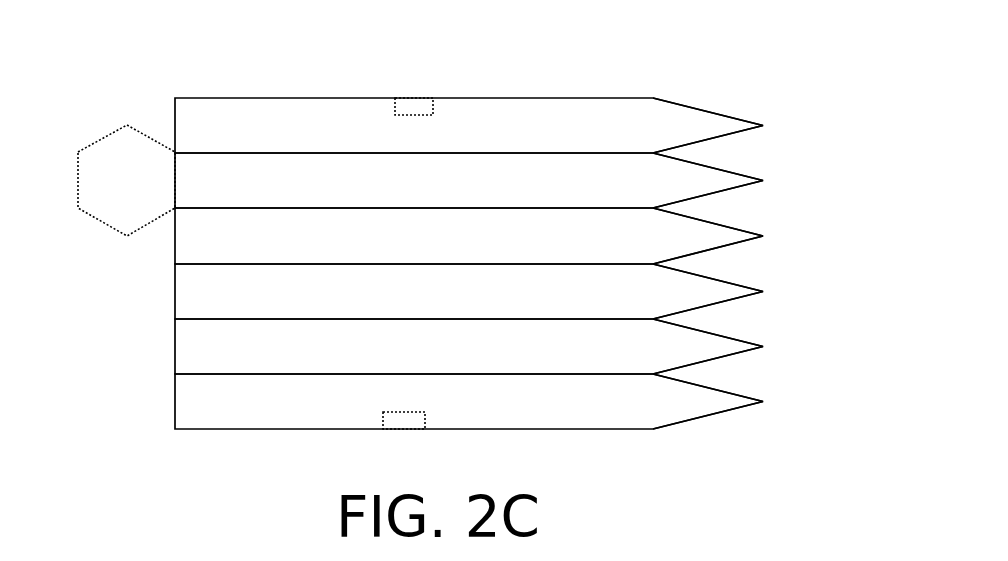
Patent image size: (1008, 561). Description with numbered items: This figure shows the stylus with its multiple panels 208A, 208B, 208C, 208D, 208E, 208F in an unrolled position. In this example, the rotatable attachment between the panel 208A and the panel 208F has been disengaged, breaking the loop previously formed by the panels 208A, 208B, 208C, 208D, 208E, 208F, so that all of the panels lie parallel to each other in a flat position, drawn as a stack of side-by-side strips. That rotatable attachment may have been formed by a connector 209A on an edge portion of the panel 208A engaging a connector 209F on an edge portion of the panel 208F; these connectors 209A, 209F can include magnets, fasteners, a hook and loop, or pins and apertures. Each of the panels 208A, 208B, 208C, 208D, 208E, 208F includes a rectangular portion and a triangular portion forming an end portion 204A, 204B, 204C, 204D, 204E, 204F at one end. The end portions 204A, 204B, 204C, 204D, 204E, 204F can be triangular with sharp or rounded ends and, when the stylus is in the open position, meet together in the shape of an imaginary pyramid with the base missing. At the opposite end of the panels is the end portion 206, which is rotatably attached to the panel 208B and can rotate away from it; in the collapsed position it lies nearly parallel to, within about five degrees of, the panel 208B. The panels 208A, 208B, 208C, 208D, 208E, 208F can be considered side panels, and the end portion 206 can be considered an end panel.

The end portion 204A is at (767, 127).
The end portion 204B is at (767, 182).
The end portion 204C is at (767, 238).
The end portion 204D is at (767, 293).
The end portion 204E is at (767, 348).
The end portion 204F is at (767, 403).
The end portion 206 is at (115, 228).
The panel 208A is at (462, 143).
The panel 208B is at (463, 196).
The panel 208C is at (461, 246).
The panel 208D is at (461, 306).
The panel 208E is at (460, 361).
The panel 208F is at (463, 405).
The connector 209A is at (416, 98).
The connector 209F is at (407, 430).